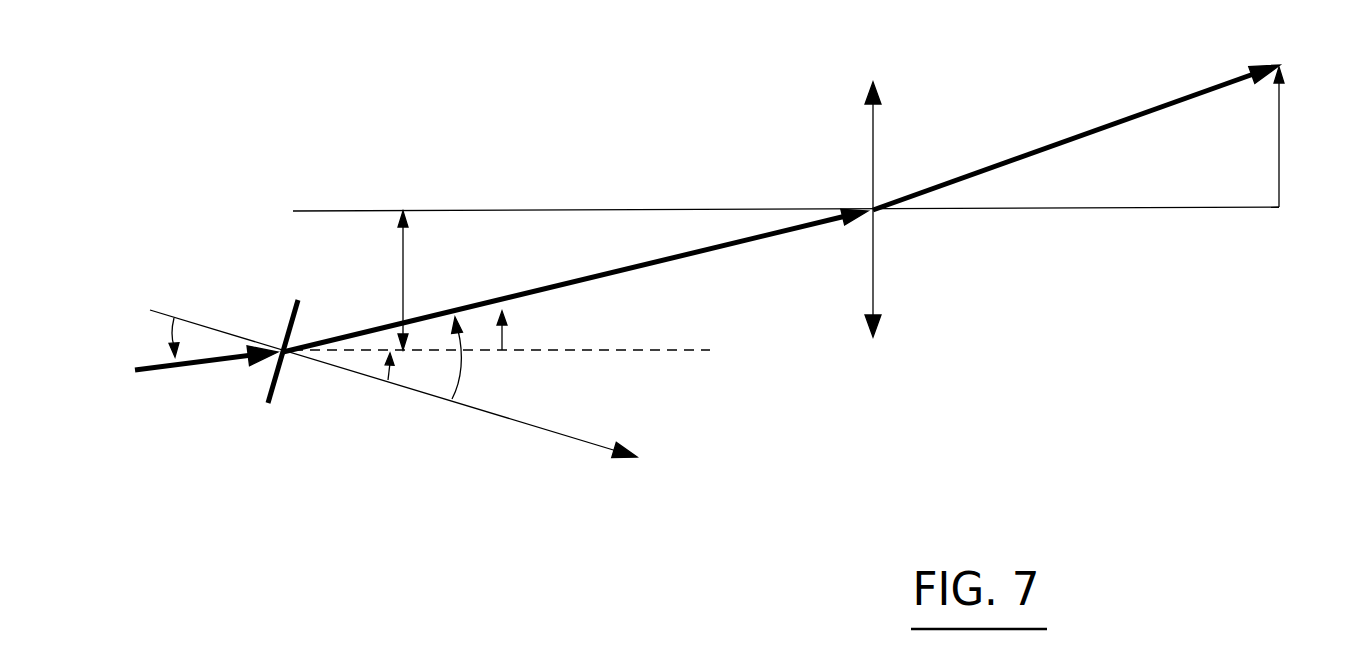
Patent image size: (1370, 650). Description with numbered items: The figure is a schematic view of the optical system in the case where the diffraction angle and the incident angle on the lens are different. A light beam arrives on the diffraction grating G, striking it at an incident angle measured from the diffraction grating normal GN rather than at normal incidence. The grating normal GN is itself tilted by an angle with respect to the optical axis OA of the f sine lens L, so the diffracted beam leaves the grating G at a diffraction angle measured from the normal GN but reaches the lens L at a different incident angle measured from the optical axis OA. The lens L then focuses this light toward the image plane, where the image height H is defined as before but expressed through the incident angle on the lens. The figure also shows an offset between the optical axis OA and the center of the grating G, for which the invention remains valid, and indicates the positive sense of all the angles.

The diffraction grating G is at (283, 332).
The diffraction grating normal GN is at (577, 440).
The f sin(θ) lens L is at (872, 189).
The optical axis OA is at (1055, 209).
The image height H(θ) H is at (1314, 137).